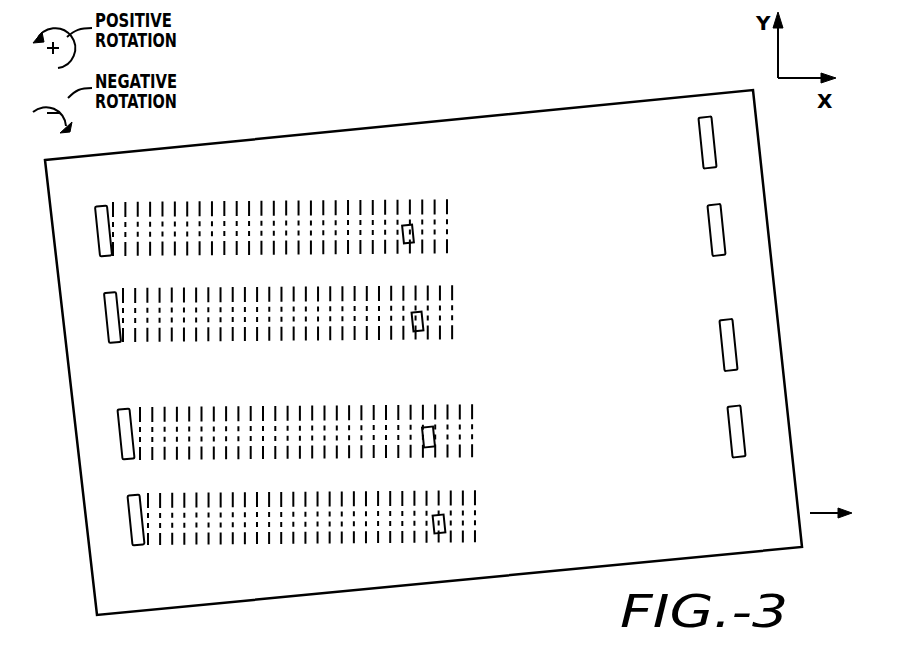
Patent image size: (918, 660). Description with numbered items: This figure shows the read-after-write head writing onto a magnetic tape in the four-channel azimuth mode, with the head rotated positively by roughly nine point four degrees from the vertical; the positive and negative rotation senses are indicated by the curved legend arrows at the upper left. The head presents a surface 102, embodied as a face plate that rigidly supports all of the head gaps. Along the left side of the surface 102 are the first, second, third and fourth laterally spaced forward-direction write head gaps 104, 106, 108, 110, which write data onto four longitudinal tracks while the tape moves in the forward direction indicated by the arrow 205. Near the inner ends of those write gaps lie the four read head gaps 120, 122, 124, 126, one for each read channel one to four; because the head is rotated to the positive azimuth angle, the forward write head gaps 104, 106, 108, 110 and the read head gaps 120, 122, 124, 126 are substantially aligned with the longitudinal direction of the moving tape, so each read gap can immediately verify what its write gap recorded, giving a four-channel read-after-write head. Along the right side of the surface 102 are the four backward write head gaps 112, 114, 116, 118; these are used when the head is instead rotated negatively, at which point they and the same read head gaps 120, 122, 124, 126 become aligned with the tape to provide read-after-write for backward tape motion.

The surface 102 is at (241, 136).
The first forward-direction write head gap 104 is at (96, 234).
The second forward-direction write head gap 106 is at (105, 318).
The third forward-direction write head gap 108 is at (118, 435).
The fourth forward-direction write head gap 110 is at (128, 520).
The backward write head gap 112 is at (700, 144).
The backward write head gap 114 is at (709, 232).
The backward write head gap 116 is at (720, 346).
The backward write head gap 118 is at (728, 433).
The read head gap 120 is at (414, 231).
The read head gap 122 is at (424, 321).
The read head gap 124 is at (435, 436).
The read head gap 126 is at (445, 523).
The arrow 205 is at (824, 516).